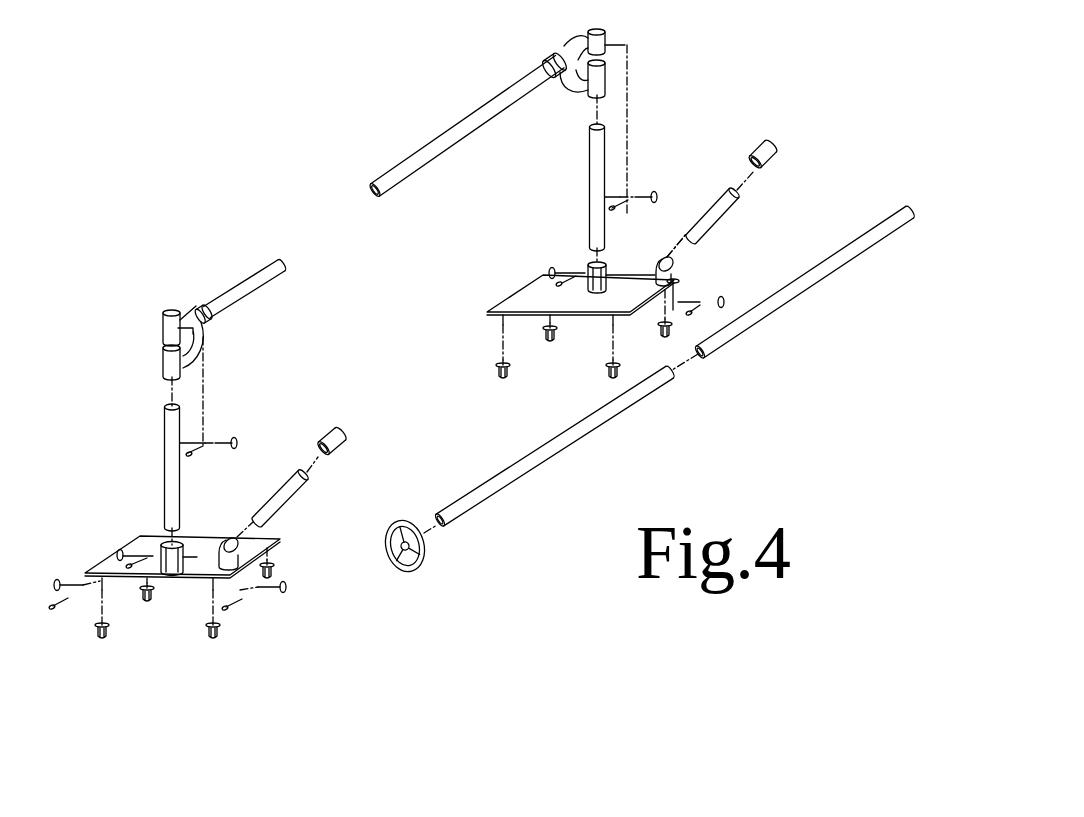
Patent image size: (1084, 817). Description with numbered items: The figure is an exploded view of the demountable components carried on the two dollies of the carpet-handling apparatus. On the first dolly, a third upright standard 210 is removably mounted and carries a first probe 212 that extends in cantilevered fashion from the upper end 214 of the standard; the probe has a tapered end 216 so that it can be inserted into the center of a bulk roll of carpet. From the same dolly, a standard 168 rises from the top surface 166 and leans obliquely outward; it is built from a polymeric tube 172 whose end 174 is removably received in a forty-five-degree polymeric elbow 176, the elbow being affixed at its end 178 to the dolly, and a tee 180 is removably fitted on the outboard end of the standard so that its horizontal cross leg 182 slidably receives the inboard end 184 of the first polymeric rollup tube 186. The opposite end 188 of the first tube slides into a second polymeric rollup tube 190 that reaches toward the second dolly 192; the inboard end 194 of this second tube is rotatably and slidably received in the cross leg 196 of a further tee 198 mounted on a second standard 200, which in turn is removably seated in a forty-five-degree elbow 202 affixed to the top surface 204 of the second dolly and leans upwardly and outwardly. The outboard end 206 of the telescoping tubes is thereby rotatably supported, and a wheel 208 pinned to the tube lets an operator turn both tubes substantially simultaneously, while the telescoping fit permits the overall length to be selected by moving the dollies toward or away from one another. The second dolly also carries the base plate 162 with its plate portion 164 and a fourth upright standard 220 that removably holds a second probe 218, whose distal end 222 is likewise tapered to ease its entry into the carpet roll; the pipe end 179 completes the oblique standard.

The base plate assembly 162 is at (510, 294).
The base plate leg 164 is at (503, 318).
The top surface 166 is at (597, 302).
The standard 168 is at (762, 188).
The polymeric tube 172 is at (708, 207).
The end of polymeric tube 174 is at (693, 247).
The 45-degree polymeric elbow 176 is at (655, 257).
The end of elbow 178 is at (672, 280).
The pipe end 179 is at (737, 212).
The tee 180 is at (782, 170).
The cross leg of tee 182 is at (758, 143).
The long pipe 184 is at (905, 220).
The first polymeric rollup tube 186 is at (888, 225).
The opposite end of first tube 188 is at (713, 345).
The long pipe 190 is at (558, 447).
The second dolly 192 is at (203, 577).
The inboard end of second tube 194 is at (670, 375).
The cross leg of further tee 196 is at (330, 432).
The further tee 198 is at (345, 447).
The second standard 200 is at (300, 514).
The 45-degree elbow 202 is at (213, 557).
The top surface of second dolly 204 is at (200, 560).
The outboard end of tubes 206 is at (455, 513).
The wheel 208 is at (420, 567).
The third upright standard 210 is at (617, 149).
The first probe 212 is at (470, 123).
The upper end of standard 214 is at (592, 143).
The pipe end 216 is at (372, 192).
The second probe 218 is at (230, 293).
The fourth upright standard 220 is at (138, 461).
The distal end of second probe 222 is at (275, 262).